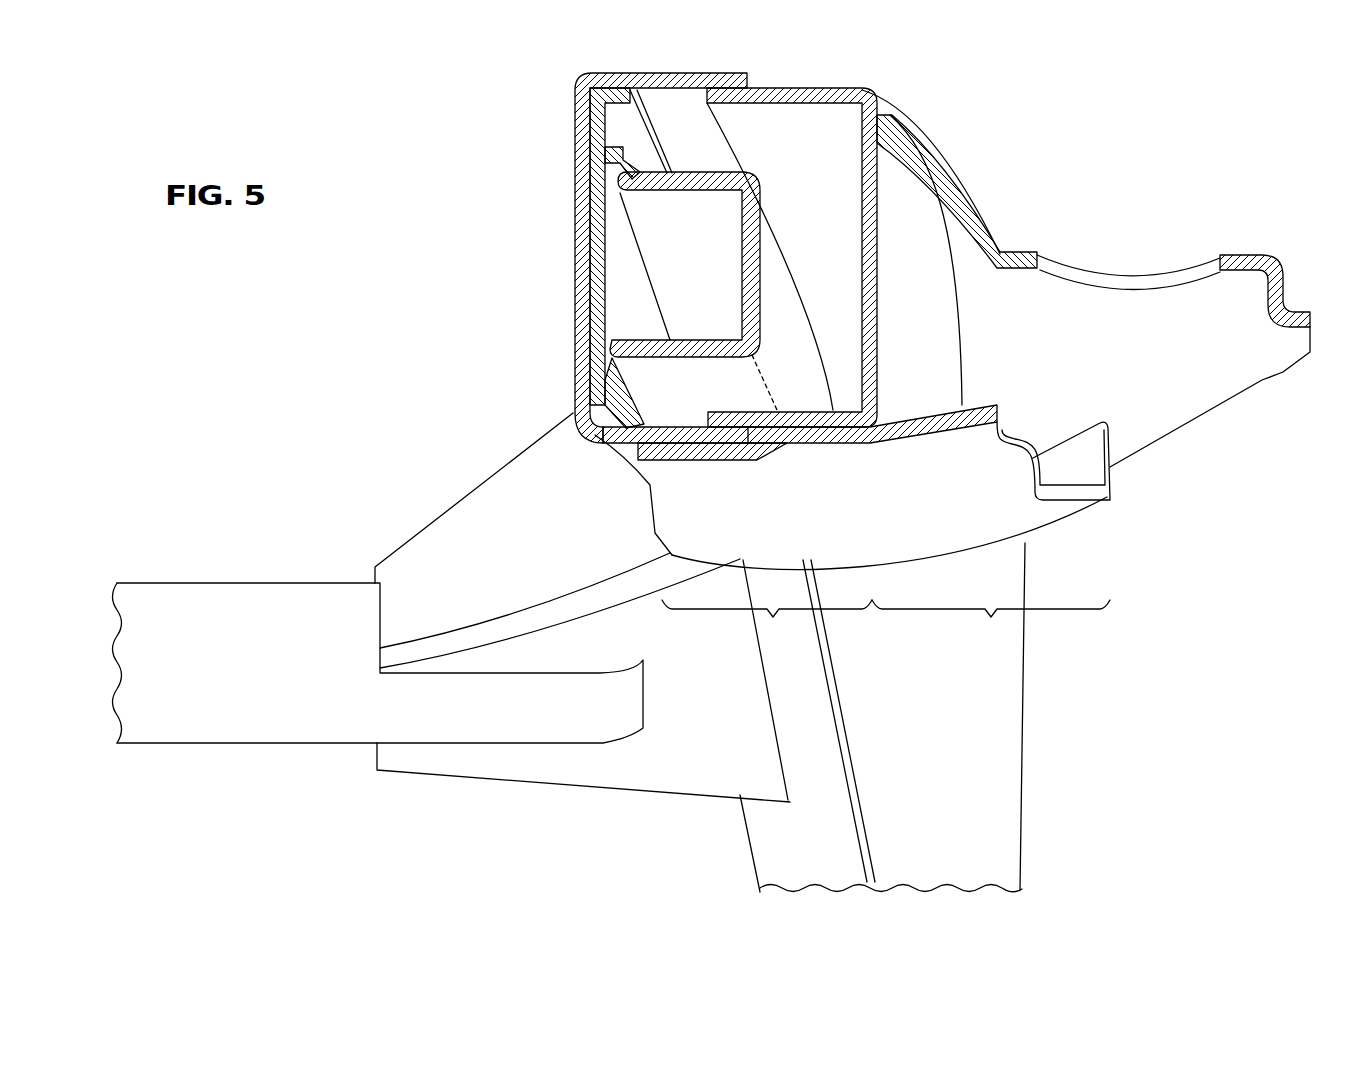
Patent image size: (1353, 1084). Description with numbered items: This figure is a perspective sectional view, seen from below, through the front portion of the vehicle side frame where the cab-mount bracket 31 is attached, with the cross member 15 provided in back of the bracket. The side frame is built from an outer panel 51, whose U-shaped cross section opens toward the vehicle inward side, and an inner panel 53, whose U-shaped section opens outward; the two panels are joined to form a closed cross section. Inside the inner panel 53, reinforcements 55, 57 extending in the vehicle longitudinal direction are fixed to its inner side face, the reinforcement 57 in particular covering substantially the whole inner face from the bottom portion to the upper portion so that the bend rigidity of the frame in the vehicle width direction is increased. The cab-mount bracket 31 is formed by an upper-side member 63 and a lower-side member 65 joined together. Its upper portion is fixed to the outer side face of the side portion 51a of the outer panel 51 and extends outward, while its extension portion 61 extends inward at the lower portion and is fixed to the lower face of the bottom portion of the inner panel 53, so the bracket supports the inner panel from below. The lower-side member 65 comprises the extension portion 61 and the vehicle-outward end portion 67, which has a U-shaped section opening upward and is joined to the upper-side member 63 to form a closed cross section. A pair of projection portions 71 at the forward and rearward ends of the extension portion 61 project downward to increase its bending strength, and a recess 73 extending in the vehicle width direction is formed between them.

The cross member 15 is at (285, 730).
The cab-mount bracket 31 is at (1135, 207).
The outer panel 51 is at (833, 88).
The side portion 51a is at (920, 297).
The inner panel 53 is at (574, 143).
The reinforcement 55 is at (660, 340).
The reinforcement 57 is at (593, 210).
The extension portion 61 is at (626, 610).
The upper-side member 63 is at (1250, 257).
The lower-side member 65 is at (1110, 473).
The vehicle-outward end portion 67 is at (856, 529).
The projection portion 71 is at (1045, 525).
The recess 73 is at (708, 507).